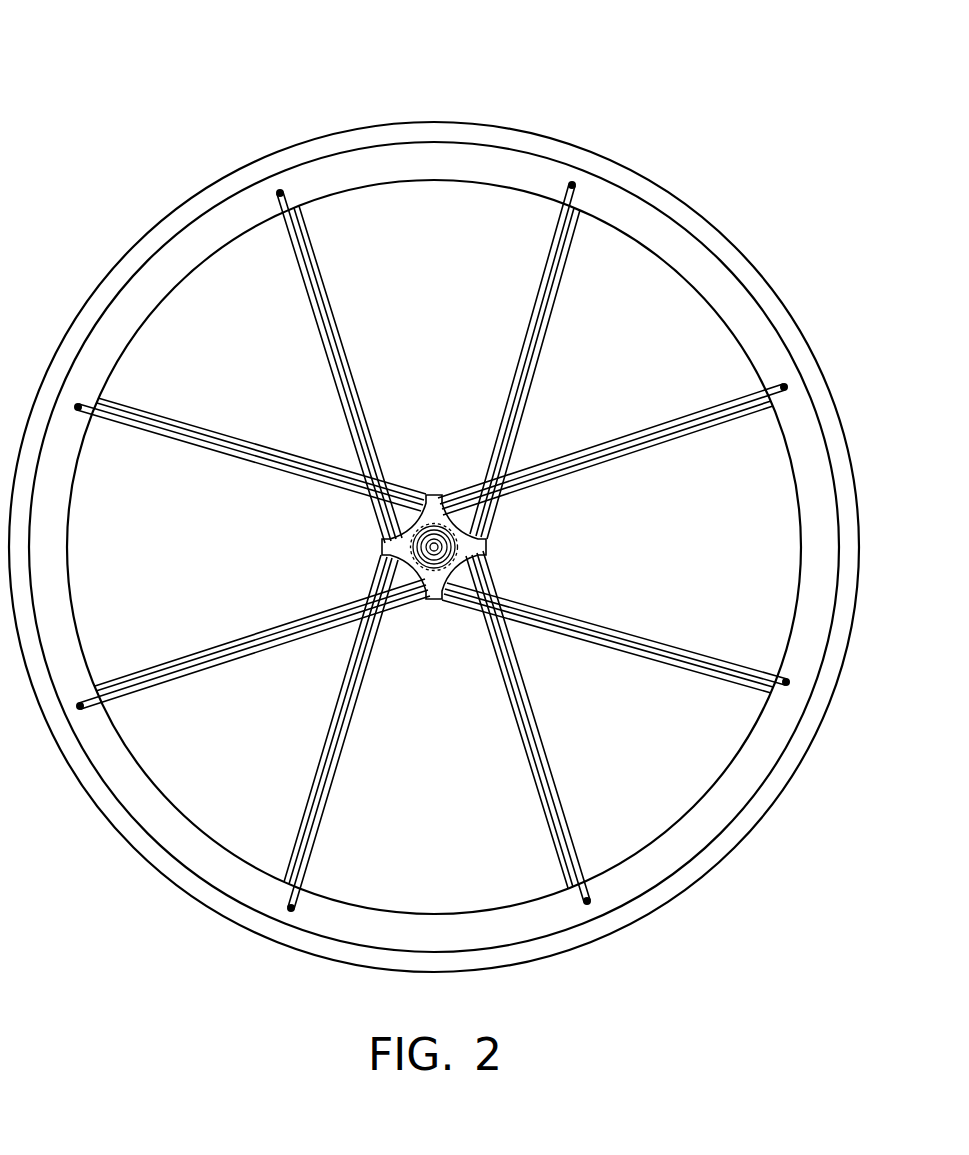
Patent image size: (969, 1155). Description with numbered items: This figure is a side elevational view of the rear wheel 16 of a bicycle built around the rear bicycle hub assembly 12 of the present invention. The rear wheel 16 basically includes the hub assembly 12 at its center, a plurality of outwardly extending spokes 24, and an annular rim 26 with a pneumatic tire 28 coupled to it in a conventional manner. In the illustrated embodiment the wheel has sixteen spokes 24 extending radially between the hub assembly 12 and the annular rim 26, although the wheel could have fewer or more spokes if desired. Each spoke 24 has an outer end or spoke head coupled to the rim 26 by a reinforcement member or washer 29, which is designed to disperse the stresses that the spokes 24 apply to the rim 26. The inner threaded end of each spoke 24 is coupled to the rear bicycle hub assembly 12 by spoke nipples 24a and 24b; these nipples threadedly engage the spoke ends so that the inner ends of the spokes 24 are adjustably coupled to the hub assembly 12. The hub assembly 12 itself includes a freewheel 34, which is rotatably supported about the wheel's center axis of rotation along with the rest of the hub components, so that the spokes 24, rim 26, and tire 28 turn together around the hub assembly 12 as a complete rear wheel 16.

The rear wheel 16 is at (619, 84).
The pneumatic tire 28 is at (474, 122).
The annular rim 26 is at (372, 182).
The spokes 24 is at (432, 484).
The spoke nipple 24a is at (428, 494).
The spoke nipple 24b is at (406, 486).
The reinforcement member or washer 29 is at (284, 188).
The freewheel 34 is at (488, 548).
The rear bicycle hub assembly 12 is at (475, 603).